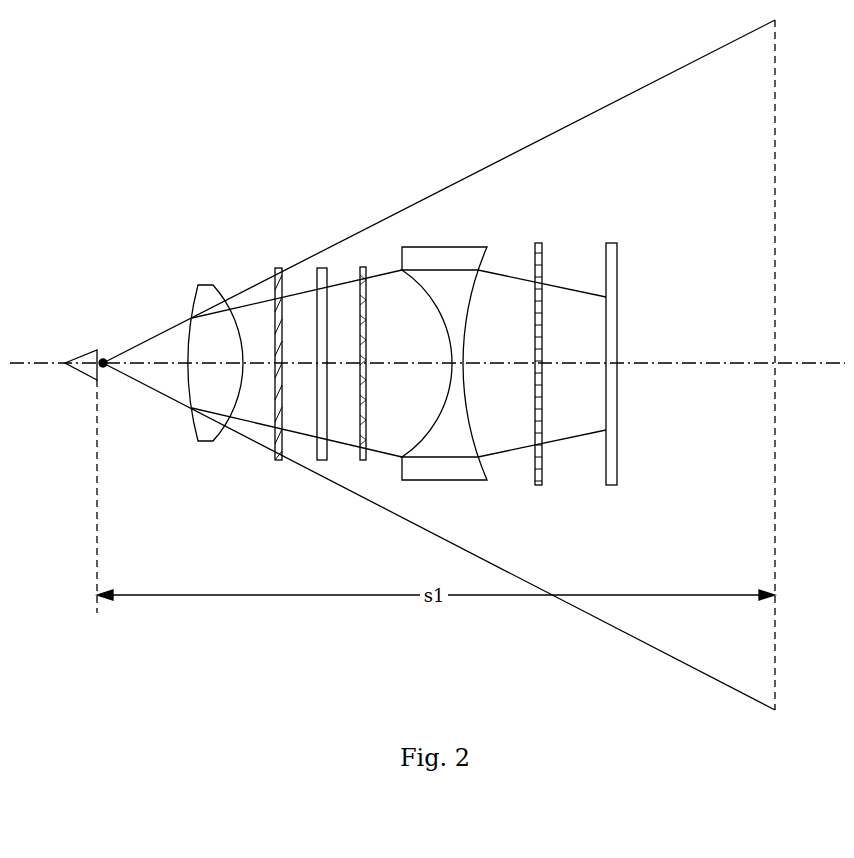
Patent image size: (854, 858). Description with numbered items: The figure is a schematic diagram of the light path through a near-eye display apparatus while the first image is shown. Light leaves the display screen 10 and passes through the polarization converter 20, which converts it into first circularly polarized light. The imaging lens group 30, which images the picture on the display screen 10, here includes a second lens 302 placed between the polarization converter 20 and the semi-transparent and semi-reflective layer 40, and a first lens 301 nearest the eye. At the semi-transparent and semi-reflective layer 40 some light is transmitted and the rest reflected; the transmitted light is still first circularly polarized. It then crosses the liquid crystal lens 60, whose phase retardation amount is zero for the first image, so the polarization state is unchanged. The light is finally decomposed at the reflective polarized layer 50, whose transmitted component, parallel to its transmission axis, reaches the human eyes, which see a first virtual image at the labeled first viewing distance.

The display screen 10 is at (611, 243).
The polarization converter 20 is at (537, 243).
The imaging lens group 30 is at (397, 377).
The first lens 301 is at (207, 285).
The second lens 302 is at (443, 247).
The semi-transparent and semi-reflective layer 40 is at (362, 267).
The reflective polarized layer 50 is at (278, 268).
The liquid crystal lens 60 is at (321, 268).